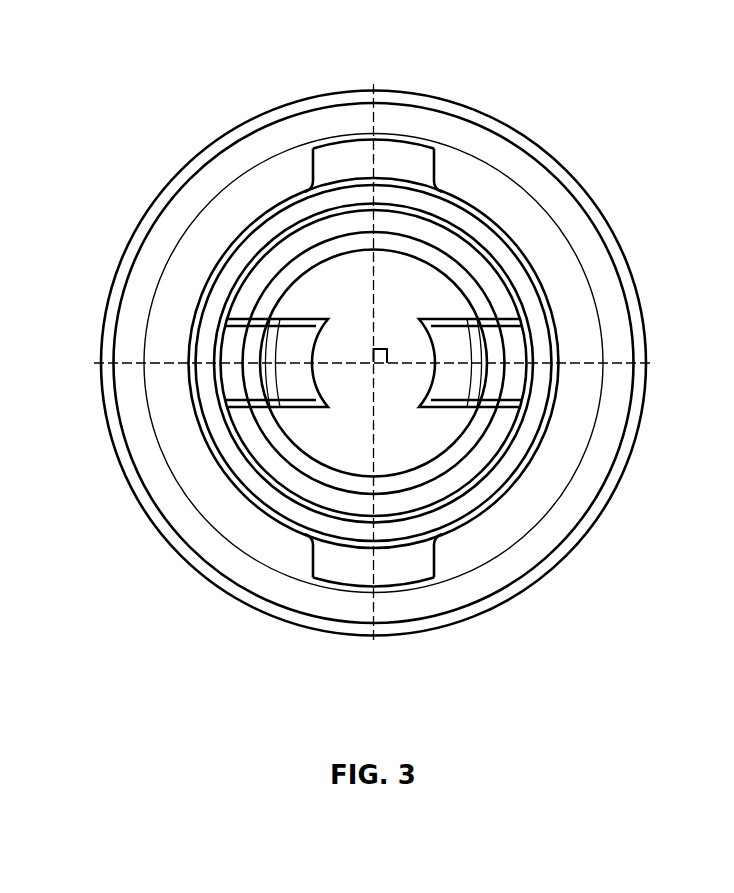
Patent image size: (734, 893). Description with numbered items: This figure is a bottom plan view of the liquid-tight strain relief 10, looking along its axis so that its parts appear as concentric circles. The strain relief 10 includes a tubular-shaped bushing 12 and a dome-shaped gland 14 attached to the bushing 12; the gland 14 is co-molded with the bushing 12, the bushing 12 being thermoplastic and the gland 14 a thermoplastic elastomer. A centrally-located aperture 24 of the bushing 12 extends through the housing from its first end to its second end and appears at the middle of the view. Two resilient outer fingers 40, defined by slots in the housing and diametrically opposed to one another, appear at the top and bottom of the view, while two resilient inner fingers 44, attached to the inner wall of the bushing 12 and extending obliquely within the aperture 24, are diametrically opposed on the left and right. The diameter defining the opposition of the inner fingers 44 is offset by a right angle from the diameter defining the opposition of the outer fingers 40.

The liquid-tight strain relief 10 is at (192, 58).
The bushing 12 is at (283, 453).
The gland 14 is at (551, 186).
The aperture 24 is at (389, 380).
The outer finger 40 is at (409, 165).
The inner finger 44 is at (290, 355).